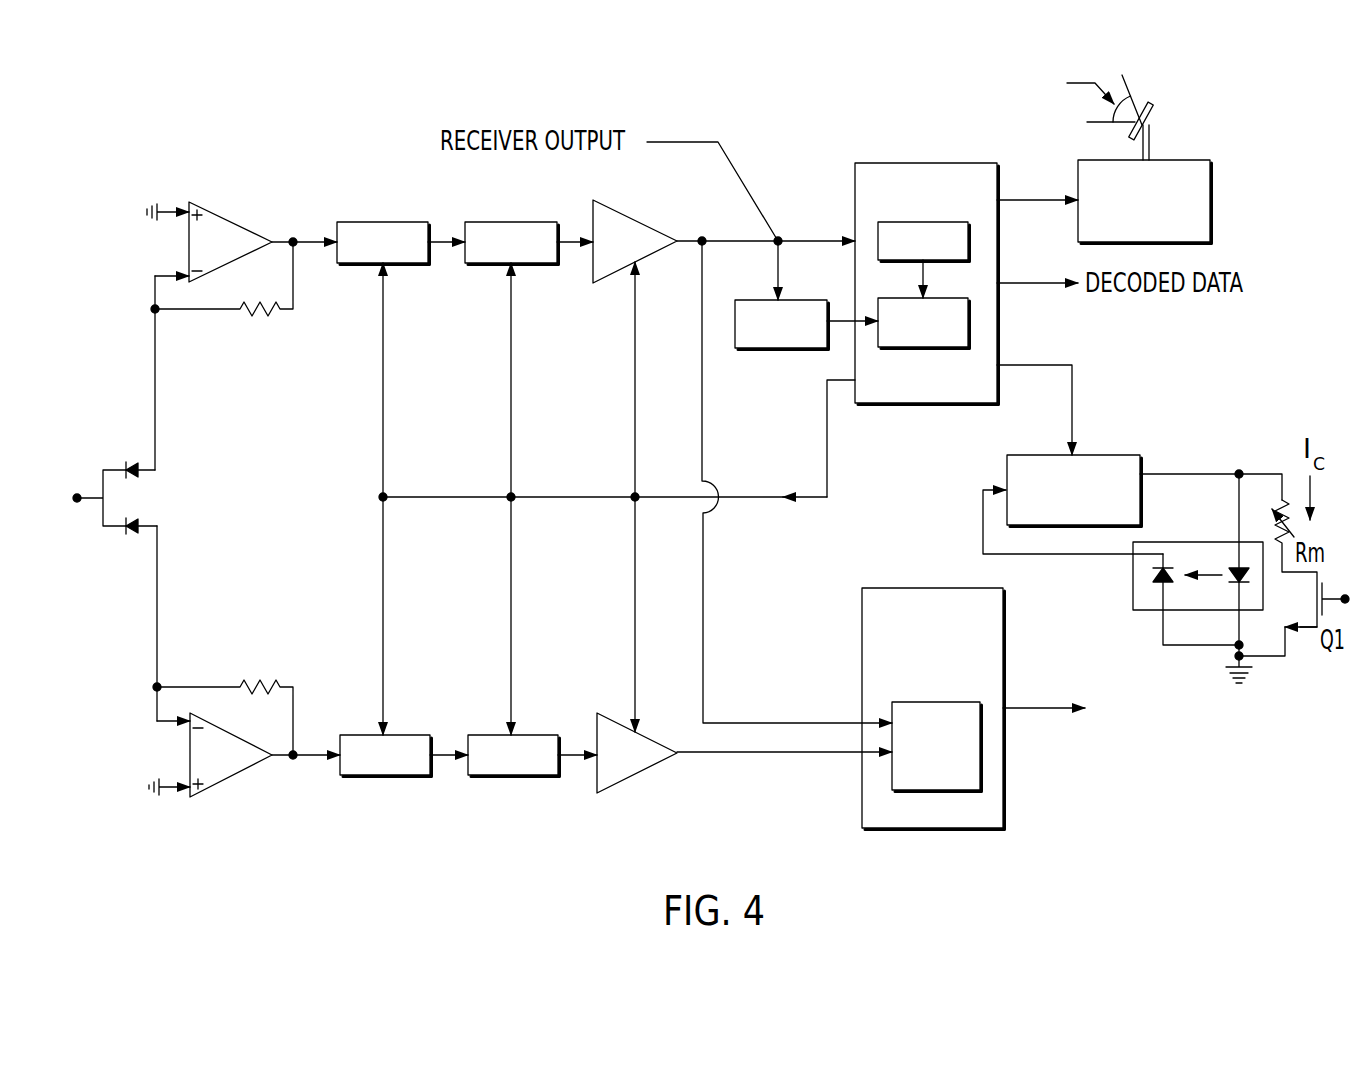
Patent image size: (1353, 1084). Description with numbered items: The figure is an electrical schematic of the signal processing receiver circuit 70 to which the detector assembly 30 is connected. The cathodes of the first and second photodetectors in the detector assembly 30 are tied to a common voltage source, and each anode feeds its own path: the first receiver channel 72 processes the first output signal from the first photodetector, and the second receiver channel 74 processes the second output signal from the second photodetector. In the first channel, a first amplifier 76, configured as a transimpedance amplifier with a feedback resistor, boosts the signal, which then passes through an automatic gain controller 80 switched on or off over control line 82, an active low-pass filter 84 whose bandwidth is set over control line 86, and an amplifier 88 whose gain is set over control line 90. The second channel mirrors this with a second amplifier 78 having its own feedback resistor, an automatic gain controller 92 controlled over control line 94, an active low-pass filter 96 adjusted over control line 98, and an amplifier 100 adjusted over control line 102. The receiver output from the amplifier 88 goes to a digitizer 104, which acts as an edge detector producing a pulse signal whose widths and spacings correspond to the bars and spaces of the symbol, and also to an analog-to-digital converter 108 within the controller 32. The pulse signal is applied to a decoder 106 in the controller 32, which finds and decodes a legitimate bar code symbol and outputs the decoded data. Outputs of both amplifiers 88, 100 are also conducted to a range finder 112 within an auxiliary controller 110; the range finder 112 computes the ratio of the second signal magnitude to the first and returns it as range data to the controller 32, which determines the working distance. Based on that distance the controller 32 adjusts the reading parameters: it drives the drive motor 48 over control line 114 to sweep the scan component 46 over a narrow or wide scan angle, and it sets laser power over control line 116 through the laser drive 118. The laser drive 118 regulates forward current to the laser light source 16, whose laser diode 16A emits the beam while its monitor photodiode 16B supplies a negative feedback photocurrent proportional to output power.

The laser light source 16 is at (1166, 576).
The laser diode 16A is at (1232, 565).
The monitor photodiode 16B is at (1148, 576).
The detector assembly 30 is at (170, 495).
The controller 32 is at (925, 163).
The scan component 46 is at (1152, 112).
The drive motor 48 is at (1212, 205).
The signal processing circuit 70 is at (1265, 139).
The first receiver channel 72 is at (170, 243).
The second receiver channel 74 is at (170, 757).
The first amplifier 76 is at (236, 222).
The second amplifier 78 is at (237, 778).
The automatic gain controller 80 is at (380, 222).
The control line 82 is at (382, 415).
The active low-pass filter 84 is at (510, 222).
The control line 86 is at (510, 413).
The amplifier 88 is at (638, 222).
The control line 90 is at (634, 413).
The automatic gain controller 92 is at (385, 775).
The control line 94 is at (382, 657).
The active low-pass filter 96 is at (512, 775).
The control line 98 is at (510, 657).
The amplifier 100 is at (640, 775).
The control line 102 is at (634, 657).
The digitizer 104 is at (775, 348).
The decoder 106 is at (925, 347).
The analog-to-digital converter 108 is at (920, 222).
The auxiliary controller 110 is at (862, 683).
The range finder 112 is at (935, 702).
The control line 114 is at (1035, 198).
The control line 116 is at (1035, 364).
The laser drive 118 is at (1035, 455).